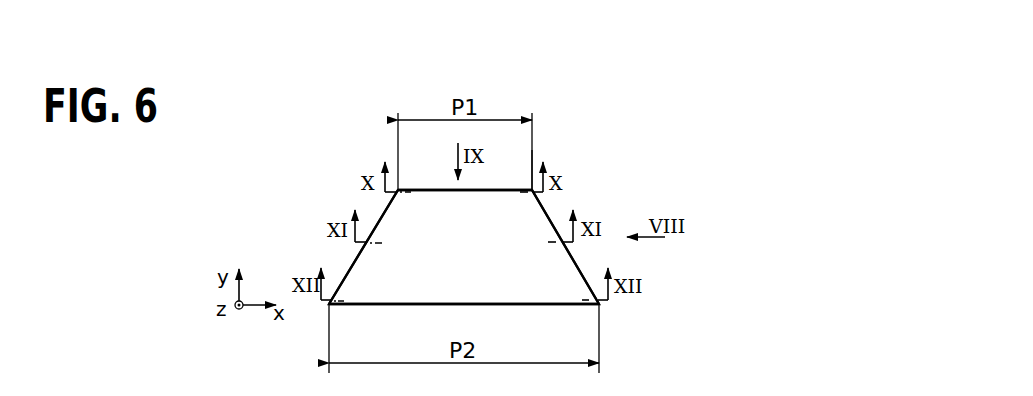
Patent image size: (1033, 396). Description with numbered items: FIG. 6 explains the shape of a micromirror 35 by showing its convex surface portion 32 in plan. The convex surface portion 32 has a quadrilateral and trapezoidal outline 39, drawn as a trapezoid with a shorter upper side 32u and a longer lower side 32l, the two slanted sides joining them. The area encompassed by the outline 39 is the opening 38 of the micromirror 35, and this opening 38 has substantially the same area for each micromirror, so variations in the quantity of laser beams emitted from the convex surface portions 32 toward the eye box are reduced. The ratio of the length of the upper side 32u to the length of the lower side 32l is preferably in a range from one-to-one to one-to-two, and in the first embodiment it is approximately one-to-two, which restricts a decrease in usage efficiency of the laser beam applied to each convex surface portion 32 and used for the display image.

The convex surface portion 32 is at (360, 278).
The upper side 32u is at (437, 188).
The lower side 32l is at (388, 306).
The micromirror 35 is at (538, 150).
The opening 38 is at (507, 268).
The outline 39 is at (380, 218).